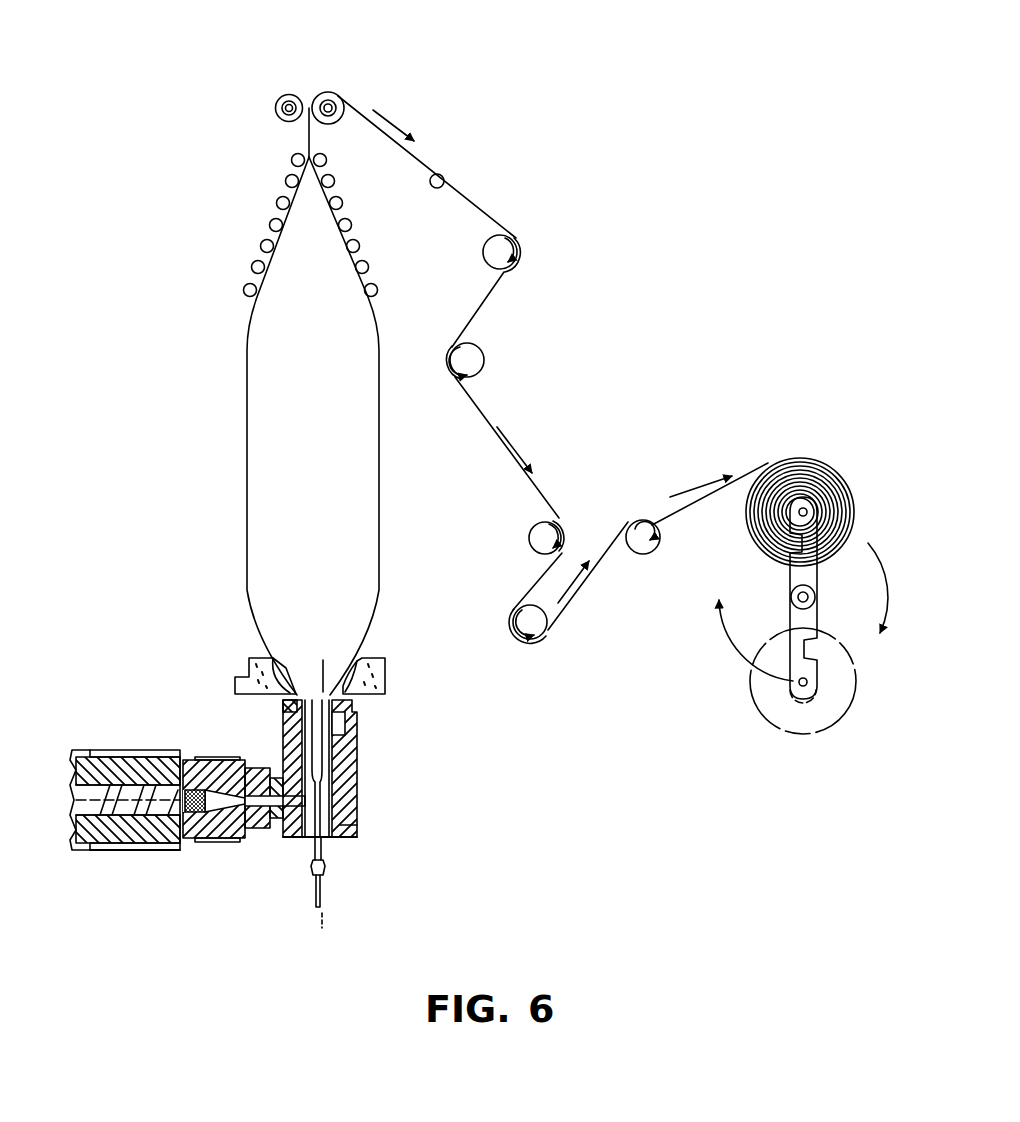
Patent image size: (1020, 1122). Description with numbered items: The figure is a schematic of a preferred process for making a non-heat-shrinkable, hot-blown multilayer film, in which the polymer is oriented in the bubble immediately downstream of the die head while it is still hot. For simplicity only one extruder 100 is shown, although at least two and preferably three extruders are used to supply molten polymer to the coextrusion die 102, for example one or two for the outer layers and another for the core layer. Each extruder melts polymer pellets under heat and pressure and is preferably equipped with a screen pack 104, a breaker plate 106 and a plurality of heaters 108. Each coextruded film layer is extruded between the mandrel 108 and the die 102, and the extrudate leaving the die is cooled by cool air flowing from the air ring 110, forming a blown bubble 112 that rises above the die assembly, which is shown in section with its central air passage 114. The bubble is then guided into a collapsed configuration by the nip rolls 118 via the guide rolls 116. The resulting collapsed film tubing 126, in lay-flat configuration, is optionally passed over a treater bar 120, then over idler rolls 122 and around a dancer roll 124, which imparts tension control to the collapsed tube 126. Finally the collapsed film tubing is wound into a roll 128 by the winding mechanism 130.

The extruder 100 is at (118, 748).
The coextrusion die 102 is at (353, 704).
The screen pack 104 is at (203, 766).
The breaker plate 106 is at (200, 852).
The heaters 108 is at (323, 660).
The air ring 110 is at (247, 676).
The bubble 112 is at (248, 418).
The air supply 114 is at (322, 945).
The guide rolls 116 is at (283, 165).
The nip rolls 118 is at (313, 95).
The treater bar 120 is at (444, 174).
The idler rolls 122 is at (498, 280).
The dancer roll 124 is at (552, 628).
The collapsed film tubing 126 is at (307, 130).
The roll 128 is at (833, 560).
The winding mechanism 130 is at (792, 597).